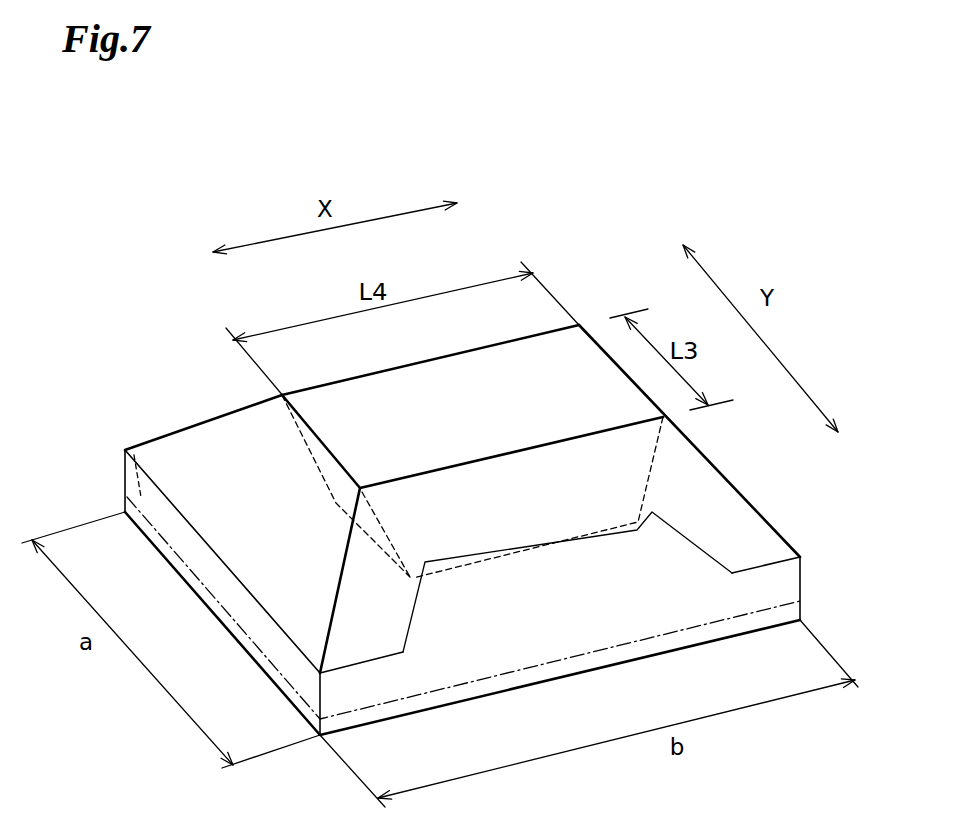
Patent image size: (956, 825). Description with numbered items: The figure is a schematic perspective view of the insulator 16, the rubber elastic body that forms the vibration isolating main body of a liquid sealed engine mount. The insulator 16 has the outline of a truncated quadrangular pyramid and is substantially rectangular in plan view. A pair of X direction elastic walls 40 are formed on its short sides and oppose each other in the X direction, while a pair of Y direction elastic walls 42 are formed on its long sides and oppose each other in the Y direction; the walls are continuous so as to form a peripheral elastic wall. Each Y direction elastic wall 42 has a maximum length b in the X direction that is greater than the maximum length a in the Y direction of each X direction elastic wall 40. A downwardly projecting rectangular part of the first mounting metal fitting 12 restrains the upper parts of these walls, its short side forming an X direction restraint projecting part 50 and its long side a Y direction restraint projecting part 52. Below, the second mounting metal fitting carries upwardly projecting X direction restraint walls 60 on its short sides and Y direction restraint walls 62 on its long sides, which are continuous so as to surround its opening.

The first mounting metal fitting 12 is at (453, 400).
The insulator 16 is at (99, 473).
The X direction elastic wall 40 is at (188, 447).
The Y direction elastic wall 42 is at (722, 515).
The X direction restraint projecting part 50 is at (353, 519).
The Y direction restraint projecting part 52 is at (620, 525).
The X direction restraint wall 60 is at (132, 447).
The Y direction restraint wall 62 is at (693, 570).